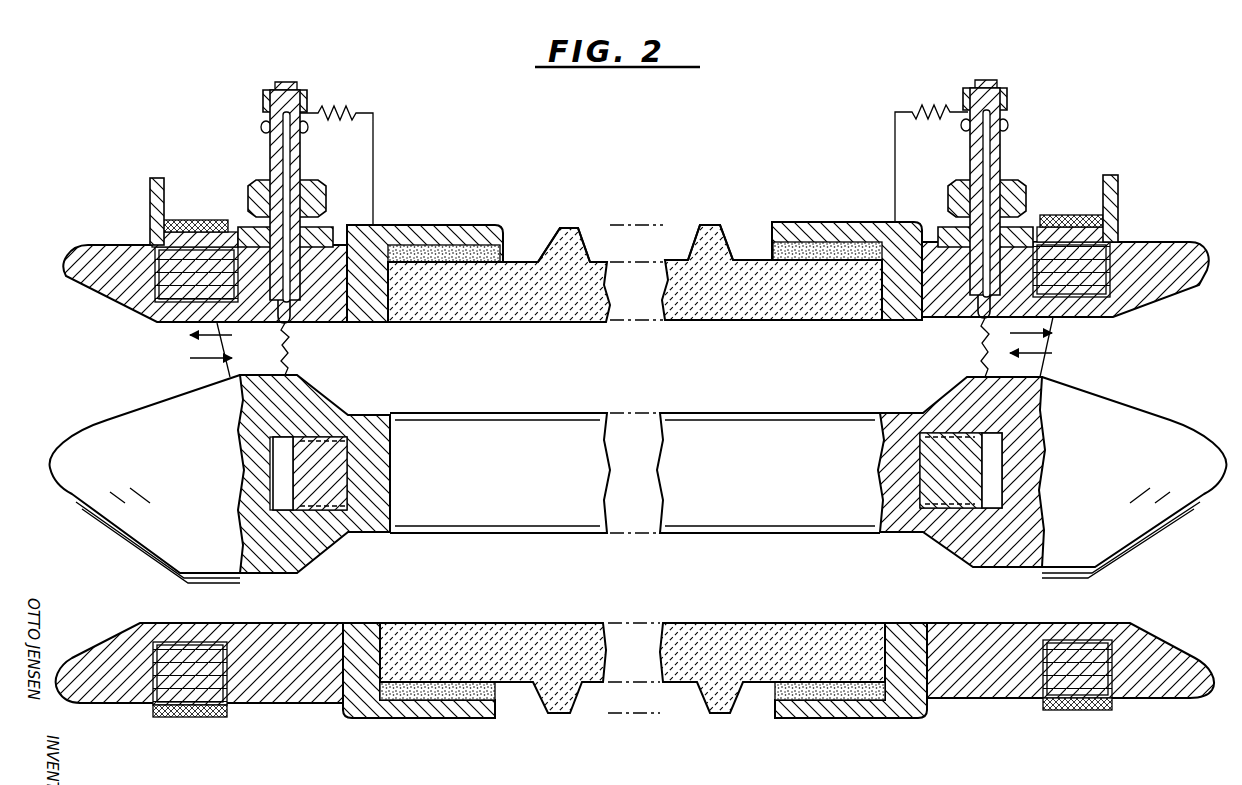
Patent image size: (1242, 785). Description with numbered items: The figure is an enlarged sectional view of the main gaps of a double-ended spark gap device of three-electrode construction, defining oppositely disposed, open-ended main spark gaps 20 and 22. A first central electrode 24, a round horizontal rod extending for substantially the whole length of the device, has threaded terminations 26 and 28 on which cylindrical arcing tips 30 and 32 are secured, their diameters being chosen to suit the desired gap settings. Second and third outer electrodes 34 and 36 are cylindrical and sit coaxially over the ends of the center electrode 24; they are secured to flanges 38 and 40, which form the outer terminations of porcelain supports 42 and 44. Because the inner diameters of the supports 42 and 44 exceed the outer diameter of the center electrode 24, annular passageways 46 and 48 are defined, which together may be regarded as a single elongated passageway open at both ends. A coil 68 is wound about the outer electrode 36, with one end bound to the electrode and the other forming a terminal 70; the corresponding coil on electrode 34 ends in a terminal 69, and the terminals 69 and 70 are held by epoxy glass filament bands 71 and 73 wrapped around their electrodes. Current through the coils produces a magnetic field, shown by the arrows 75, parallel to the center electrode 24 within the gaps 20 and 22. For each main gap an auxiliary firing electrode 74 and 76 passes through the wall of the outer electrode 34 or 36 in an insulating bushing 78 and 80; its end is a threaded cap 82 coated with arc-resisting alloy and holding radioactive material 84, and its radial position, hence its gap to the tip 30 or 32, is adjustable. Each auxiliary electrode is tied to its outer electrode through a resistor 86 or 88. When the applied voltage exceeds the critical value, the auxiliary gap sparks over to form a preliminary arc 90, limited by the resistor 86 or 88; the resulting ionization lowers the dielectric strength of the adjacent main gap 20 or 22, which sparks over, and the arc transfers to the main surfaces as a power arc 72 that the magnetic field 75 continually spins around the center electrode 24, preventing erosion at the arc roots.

The main spark gap 20 is at (155, 345).
The main spark gap 22 is at (1105, 353).
The center electrode 24 is at (540, 401).
The threaded termination 26 is at (300, 456).
The threaded termination 28 is at (958, 461).
The arcing tip 30 is at (118, 416).
The arcing tip 32 is at (1178, 423).
The outer electrode 34 is at (121, 246).
The outer electrode 36 is at (1188, 243).
The flange 38 is at (458, 208).
The flange 40 is at (829, 222).
The porcelain support 42 is at (562, 232).
The porcelain support 44 is at (706, 229).
The annular passageway 46 is at (464, 380).
The annular passageway 48 is at (809, 380).
The coil 68 is at (1118, 246).
The terminal 69 is at (176, 168).
The terminal 70 is at (1119, 197).
The epoxy glass filament band 71 is at (220, 206).
The epoxy glass filament band 73 is at (1090, 216).
The auxiliary firing electrode 74 is at (270, 156).
The magnetic field 75 is at (205, 360).
The auxiliary firing electrode 76 is at (1003, 161).
The insulating bushing 78 is at (302, 166).
The insulating bushing 80 is at (969, 151).
The threaded cap 82 is at (293, 312).
The radioactive material 84 is at (973, 292).
The resistor 86 is at (349, 110).
The resistor 88 is at (946, 108).
The preliminary arc 90 is at (291, 350).
The main arc 72 is at (226, 363).